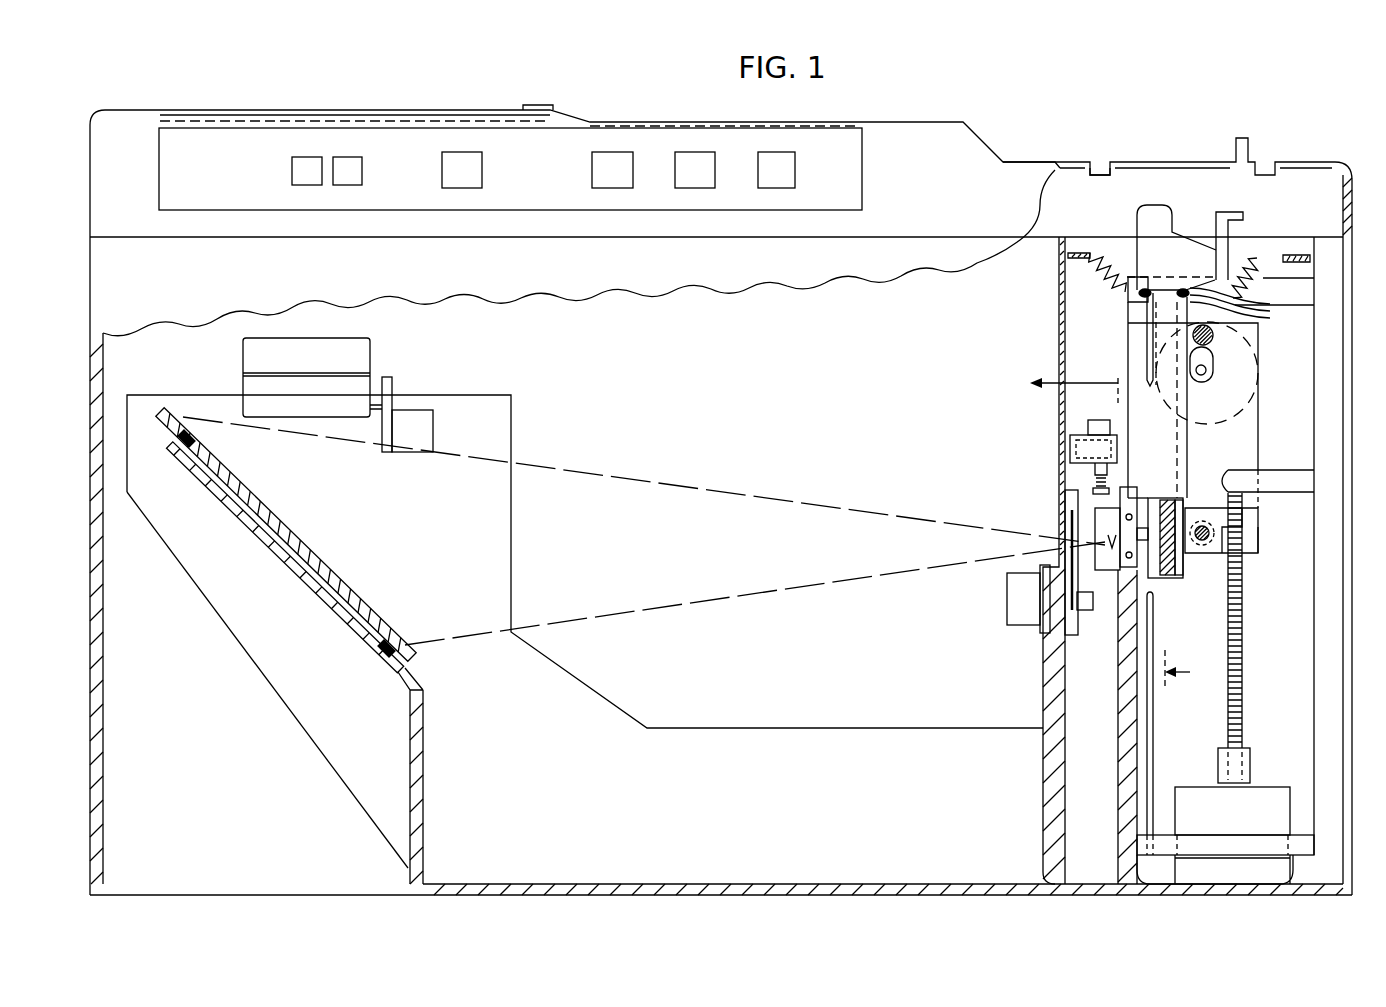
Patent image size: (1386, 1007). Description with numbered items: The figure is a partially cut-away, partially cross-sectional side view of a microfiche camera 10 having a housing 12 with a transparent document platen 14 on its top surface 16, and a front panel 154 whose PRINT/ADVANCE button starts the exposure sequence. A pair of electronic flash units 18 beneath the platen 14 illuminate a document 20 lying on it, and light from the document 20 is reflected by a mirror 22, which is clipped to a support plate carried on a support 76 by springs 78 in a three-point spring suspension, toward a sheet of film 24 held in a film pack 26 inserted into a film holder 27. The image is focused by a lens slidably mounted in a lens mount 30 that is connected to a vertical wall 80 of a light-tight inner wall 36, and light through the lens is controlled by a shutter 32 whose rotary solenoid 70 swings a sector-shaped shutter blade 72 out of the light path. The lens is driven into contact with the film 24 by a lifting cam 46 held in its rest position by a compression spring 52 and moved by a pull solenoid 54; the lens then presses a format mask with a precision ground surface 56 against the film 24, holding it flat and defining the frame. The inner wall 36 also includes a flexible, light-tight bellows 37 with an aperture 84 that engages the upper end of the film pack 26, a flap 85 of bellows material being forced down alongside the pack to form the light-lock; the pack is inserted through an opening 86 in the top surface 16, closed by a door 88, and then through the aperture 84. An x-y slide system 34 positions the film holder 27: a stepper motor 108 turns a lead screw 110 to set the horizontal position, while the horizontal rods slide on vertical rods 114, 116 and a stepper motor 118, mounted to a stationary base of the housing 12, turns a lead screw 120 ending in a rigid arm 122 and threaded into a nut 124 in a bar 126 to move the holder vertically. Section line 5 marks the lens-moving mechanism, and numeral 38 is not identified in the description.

The microfiche camera 10 is at (1036, 117).
The housing 12 is at (1062, 160).
The transparent document platen 14 is at (271, 117).
The top surface 16 is at (665, 121).
The electronic flash units 18 is at (243, 350).
The document 20 is at (403, 115).
The mirror 22 is at (330, 574).
The sheet of film 24 is at (1160, 505).
The film pack 26 is at (1170, 207).
The film holder 27 is at (1130, 311).
The lens mount 30 is at (1092, 566).
The shutter 32 is at (1040, 558).
The x-y slide system 34 is at (1268, 541).
The light-tight inner wall 36 is at (1050, 283).
The bellows 37 is at (1276, 258).
The lens mount 38 is at (1090, 491).
The lifting cam 46 is at (1150, 490).
The compression spring 52 is at (1095, 478).
The pull solenoid 54 is at (1072, 438).
The precision ground surface 56 is at (1172, 574).
The rotary solenoid 70 is at (1007, 606).
The sector-shaped shutter blade 72 is at (1060, 520).
The support 76 is at (270, 550).
The springs 78 is at (190, 455).
The vertical wall 80 is at (1062, 340).
The aperture 84 is at (1160, 290).
The flap 85 is at (1235, 305).
The opening 86 is at (1110, 173).
The door 88 is at (1172, 160).
The stepper motor 108 is at (1257, 417).
The lead screw 110 is at (1212, 372).
The vertical rod 114 is at (1154, 705).
The vertical rod 116 is at (1147, 353).
The stepper motor 118 is at (1225, 835).
The lead screw 120 is at (1243, 700).
The rigid arm 122 is at (1278, 470).
The nut 124 is at (1249, 532).
The bar 126 is at (1226, 485).
The front panel 154 is at (832, 143).
The section line 5- 5 is at (1108, 530).